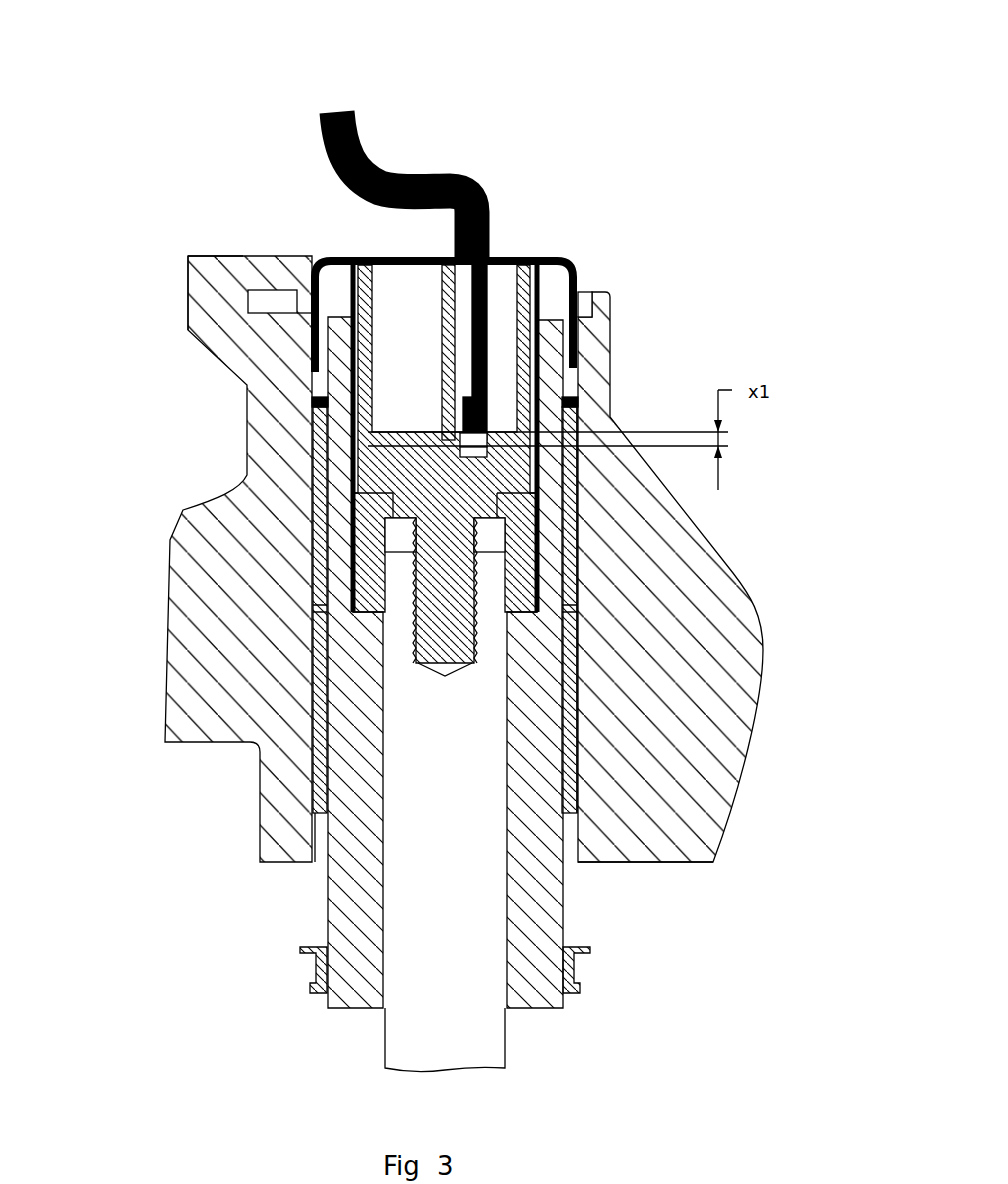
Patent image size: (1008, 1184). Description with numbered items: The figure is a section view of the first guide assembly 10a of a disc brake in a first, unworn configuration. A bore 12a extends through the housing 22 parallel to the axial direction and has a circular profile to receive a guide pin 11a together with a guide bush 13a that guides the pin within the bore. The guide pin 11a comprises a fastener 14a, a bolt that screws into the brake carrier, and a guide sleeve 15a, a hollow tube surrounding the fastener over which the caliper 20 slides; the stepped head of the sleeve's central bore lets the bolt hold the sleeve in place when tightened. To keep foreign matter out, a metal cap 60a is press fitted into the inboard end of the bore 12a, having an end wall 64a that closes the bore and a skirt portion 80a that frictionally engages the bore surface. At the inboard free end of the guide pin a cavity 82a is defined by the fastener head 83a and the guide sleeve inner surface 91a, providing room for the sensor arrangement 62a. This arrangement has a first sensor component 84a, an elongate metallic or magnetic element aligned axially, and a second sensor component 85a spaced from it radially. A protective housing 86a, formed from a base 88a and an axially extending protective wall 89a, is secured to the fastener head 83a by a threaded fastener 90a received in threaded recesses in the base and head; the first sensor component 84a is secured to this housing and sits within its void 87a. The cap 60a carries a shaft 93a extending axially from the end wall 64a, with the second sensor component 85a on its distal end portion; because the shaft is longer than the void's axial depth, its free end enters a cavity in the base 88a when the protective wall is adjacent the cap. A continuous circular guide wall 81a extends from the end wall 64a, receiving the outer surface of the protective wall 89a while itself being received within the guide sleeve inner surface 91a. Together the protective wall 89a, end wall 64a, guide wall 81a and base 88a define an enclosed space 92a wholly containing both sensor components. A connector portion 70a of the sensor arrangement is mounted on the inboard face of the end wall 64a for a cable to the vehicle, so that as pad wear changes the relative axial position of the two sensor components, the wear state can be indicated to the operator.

The first guide assembly 10a is at (500, 190).
The connector portion 70a is at (440, 177).
The void 87a is at (502, 320).
The cap 60a is at (572, 252).
The protective wall 89a is at (540, 306).
The guide wall 81a is at (580, 318).
The cavity 82a is at (549, 362).
The guide sleeve inner surface 91a is at (549, 420).
The guide pin 11a is at (589, 545).
The guide bush 13a is at (567, 653).
The bore 12a is at (589, 720).
The guide sleeve 15a is at (567, 783).
The fastener 14a is at (475, 847).
The housing 22 is at (693, 843).
The caliper 20 is at (670, 866).
The shaft 93a is at (293, 272).
The end wall 64a is at (380, 255).
The enclosed space 92a is at (418, 283).
The protective housing 86a is at (313, 328).
The skirt portion 80a is at (352, 333).
The sensor arrangement 62a is at (418, 386).
The first sensor component 84a is at (443, 402).
The second sensor component 85a is at (393, 453).
The base 88a is at (462, 410).
The fastener head 83a is at (370, 520).
The threaded fastener 90a is at (440, 595).